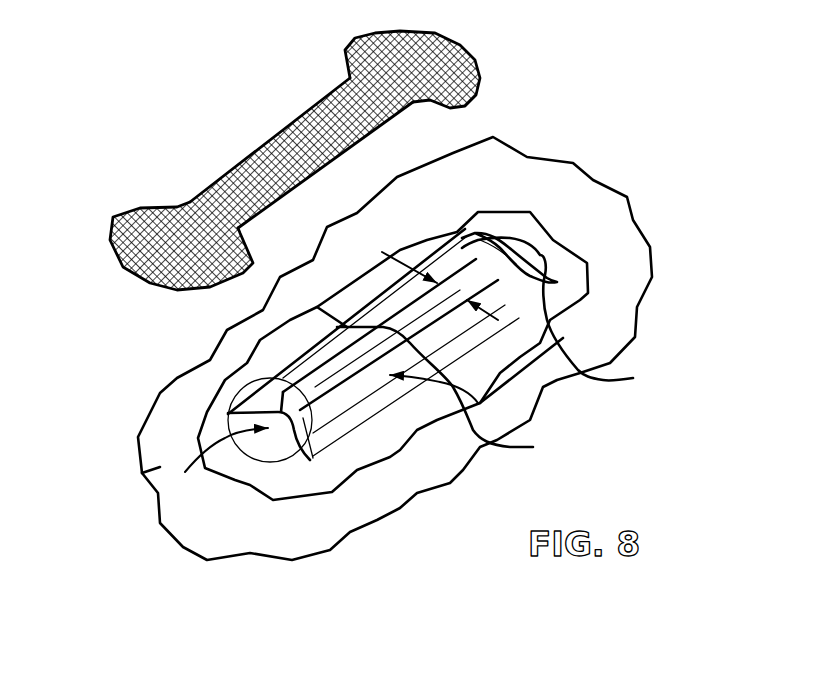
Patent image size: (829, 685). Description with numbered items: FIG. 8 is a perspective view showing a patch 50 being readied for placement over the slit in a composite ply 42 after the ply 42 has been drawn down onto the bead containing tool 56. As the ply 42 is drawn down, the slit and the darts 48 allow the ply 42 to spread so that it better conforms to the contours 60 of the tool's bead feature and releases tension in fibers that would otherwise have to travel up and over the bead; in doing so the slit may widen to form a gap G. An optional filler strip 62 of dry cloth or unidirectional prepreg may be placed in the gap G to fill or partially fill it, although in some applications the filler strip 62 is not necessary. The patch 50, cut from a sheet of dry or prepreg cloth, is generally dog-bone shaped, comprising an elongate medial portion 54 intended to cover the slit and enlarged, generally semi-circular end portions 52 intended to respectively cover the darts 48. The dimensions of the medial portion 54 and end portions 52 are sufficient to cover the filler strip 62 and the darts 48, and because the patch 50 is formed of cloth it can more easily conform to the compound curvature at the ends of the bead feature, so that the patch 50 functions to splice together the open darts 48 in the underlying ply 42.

The ply 42 is at (142, 473).
The darts 48 is at (260, 402).
The patch 50 is at (225, 148).
The end portions 52 is at (325, 130).
The medial portion 54 is at (133, 237).
The tool 56 is at (573, 273).
The contours 60 is at (225, 438).
The filler strip 62 is at (564, 314).
The gap G is at (429, 275).